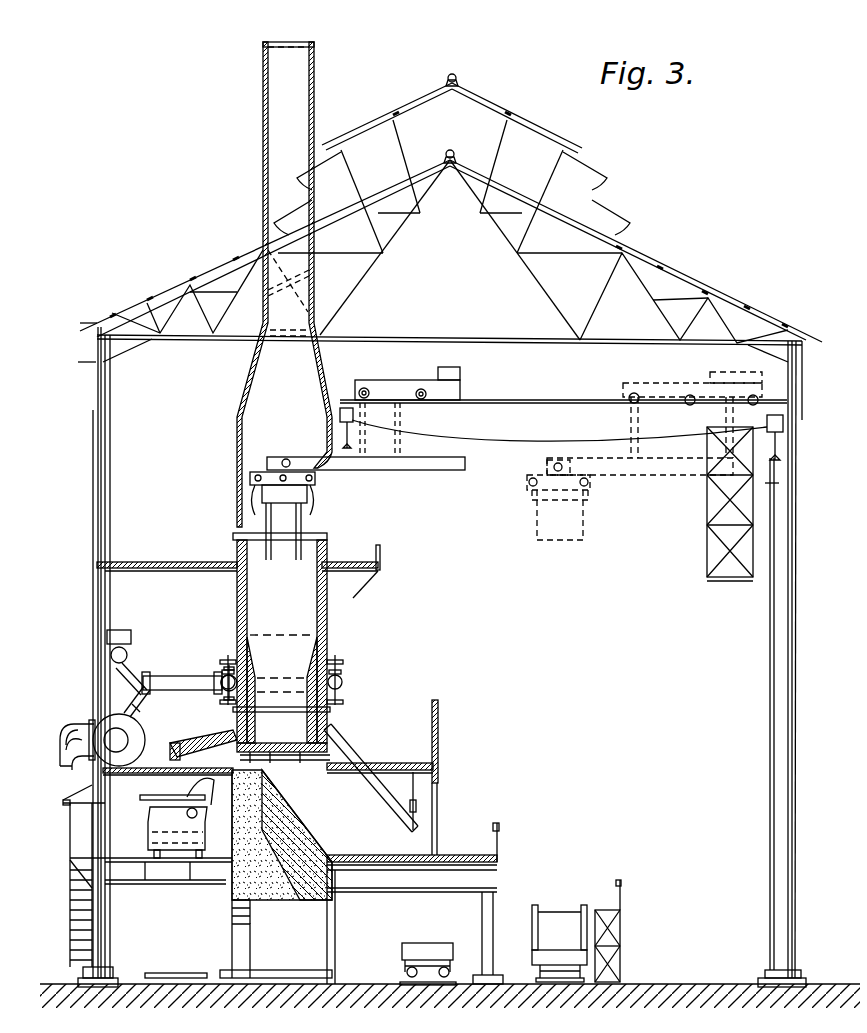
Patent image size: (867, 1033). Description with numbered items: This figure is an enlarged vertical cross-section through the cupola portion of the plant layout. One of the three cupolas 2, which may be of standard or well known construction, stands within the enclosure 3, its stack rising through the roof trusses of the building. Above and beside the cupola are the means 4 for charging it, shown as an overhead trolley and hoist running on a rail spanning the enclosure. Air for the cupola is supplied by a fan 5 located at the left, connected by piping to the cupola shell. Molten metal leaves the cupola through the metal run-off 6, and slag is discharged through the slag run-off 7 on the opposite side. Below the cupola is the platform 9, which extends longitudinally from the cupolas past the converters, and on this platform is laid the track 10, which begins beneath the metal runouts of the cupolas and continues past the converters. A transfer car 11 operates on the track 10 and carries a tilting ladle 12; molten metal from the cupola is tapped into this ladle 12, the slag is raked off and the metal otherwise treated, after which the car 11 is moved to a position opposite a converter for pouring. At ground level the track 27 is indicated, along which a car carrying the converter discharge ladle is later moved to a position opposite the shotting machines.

The cupola 2 is at (327, 645).
The enclosure 3 is at (797, 628).
The charging means 4 is at (462, 392).
The fan 5 is at (130, 734).
The metal run-off 6 is at (207, 742).
The slag run-off 7 is at (340, 740).
The platform 9 is at (121, 860).
The track 10 is at (198, 858).
The transfer car 11 is at (175, 832).
The tilting ladle 12 is at (176, 806).
The track 27 is at (150, 978).